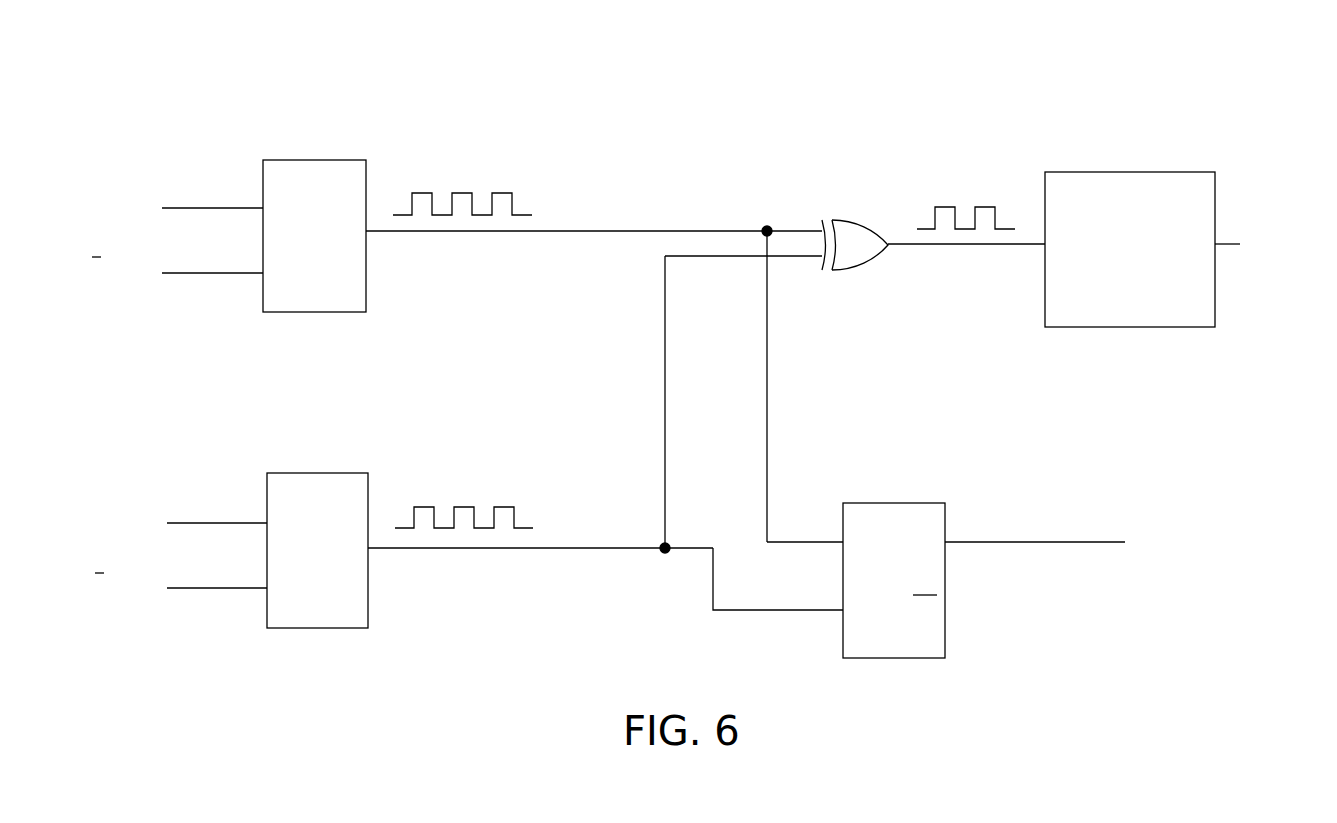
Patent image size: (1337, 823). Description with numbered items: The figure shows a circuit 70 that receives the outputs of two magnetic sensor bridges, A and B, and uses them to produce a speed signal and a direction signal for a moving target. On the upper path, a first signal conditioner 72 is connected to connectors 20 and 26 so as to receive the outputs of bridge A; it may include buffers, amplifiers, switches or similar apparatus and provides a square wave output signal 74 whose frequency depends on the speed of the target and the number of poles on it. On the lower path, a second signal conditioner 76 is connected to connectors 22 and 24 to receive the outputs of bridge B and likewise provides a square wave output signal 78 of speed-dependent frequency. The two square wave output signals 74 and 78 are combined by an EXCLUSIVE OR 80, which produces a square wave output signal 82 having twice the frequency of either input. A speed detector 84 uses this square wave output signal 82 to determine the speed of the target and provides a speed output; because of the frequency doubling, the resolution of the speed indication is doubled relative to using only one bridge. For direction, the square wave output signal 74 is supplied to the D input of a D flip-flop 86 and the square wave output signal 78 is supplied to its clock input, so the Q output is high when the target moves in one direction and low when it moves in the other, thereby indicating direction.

The circuit 70 is at (877, 87).
The connector 20 is at (177, 208).
The connector 26 is at (187, 273).
The connector 22 is at (197, 523).
The connector 24 is at (208, 588).
The first signal conditioner 72 is at (303, 160).
The square wave output signal 74 is at (450, 175).
The second signal conditioner 76 is at (303, 473).
The square wave output signal 78 is at (467, 498).
The EXCLUSIVE OR 80 is at (852, 220).
The square wave output signal 82 is at (970, 185).
The speed detector 84 is at (1120, 172).
The D flip-flop 86 is at (897, 503).